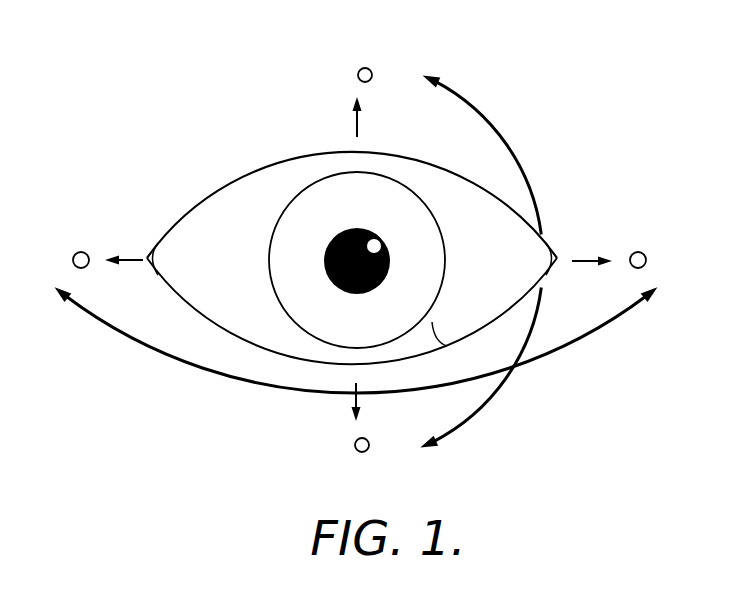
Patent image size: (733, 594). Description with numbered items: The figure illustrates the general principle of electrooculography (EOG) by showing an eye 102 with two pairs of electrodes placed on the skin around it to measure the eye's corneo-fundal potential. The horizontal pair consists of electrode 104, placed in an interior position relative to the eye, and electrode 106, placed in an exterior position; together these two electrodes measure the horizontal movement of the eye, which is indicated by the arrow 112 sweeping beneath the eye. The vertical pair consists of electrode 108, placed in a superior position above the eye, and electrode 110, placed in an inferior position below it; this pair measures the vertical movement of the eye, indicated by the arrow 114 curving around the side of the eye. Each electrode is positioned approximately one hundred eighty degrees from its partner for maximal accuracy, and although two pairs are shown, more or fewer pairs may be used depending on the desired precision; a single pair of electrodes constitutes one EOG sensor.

The eye 102 is at (245, 174).
The electrode 104 is at (639, 252).
The electrode 106 is at (75, 250).
The electrode 108 is at (357, 64).
The electrode 110 is at (358, 454).
The arrow 112 is at (203, 373).
The arrow 114 is at (512, 158).